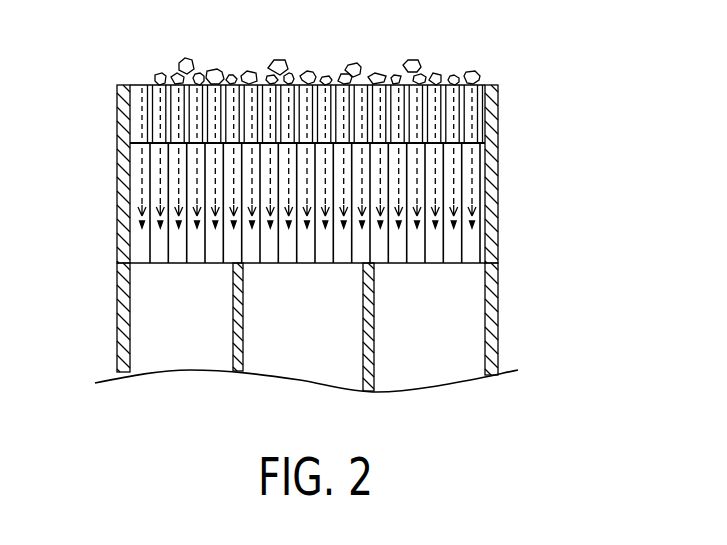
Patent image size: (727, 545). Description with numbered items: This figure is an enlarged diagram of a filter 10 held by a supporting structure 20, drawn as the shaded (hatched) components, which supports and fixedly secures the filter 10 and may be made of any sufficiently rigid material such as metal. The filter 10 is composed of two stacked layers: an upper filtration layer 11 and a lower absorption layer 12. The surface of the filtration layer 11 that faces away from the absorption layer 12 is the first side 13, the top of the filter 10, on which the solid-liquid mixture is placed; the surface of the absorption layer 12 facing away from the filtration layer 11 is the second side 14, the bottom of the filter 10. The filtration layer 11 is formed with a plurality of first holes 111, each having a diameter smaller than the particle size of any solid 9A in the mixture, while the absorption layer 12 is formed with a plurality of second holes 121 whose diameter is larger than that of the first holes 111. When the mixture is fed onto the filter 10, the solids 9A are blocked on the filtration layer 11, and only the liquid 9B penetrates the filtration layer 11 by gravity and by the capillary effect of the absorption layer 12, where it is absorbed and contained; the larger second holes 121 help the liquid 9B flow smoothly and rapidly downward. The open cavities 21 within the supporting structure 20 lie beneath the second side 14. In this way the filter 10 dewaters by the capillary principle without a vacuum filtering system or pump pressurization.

The filter 10 is at (565, 90).
The filtration layer 11 is at (487, 111).
The first holes 111 is at (143, 101).
The absorption layer 12 is at (487, 223).
The second holes 121 is at (138, 198).
The first side 13 is at (137, 87).
The second side 14 is at (142, 263).
The supporting structure 20 is at (510, 332).
The cavity 21 is at (142, 327).
The solid 9A is at (413, 63).
The liquid 9B is at (479, 168).